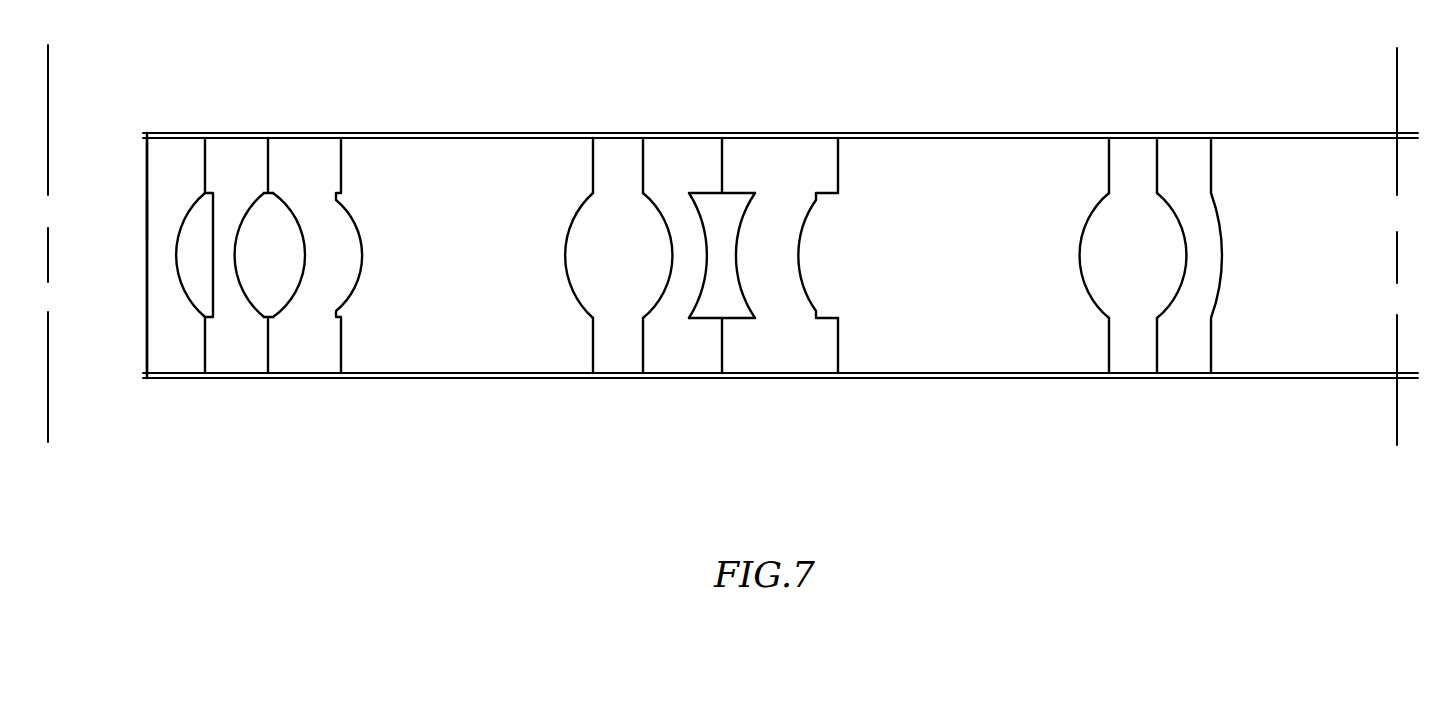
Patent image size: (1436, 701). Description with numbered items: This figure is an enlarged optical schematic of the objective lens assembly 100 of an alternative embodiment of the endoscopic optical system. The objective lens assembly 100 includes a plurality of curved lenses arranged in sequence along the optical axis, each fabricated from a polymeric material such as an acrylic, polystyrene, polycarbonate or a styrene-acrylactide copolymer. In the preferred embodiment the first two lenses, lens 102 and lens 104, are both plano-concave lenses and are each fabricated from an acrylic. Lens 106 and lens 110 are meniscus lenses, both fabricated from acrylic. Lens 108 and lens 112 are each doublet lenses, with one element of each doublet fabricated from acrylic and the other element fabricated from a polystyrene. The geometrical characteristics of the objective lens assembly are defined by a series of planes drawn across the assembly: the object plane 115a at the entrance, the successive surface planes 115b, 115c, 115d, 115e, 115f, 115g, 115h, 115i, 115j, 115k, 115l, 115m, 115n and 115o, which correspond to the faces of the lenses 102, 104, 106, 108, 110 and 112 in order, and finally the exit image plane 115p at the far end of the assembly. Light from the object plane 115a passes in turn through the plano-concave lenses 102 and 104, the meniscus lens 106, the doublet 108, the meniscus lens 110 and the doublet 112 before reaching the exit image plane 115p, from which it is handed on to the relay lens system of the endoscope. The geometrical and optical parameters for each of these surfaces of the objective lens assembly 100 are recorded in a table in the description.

The objective lens assembly 100 is at (430, 452).
The plano-concave lens 102 is at (172, 167).
The plano-concave lens 104 is at (235, 358).
The meniscus lens 106 is at (310, 162).
The doublet lens 108 is at (640, 117).
The meniscus lens 110 is at (777, 162).
The doublet lens 112 is at (1155, 118).
The object plane 115a is at (50, 405).
The surface plane 115b is at (147, 217).
The surface plane 115c is at (215, 213).
The surface plane 115d is at (180, 223).
The surface plane 115e is at (238, 262).
The surface plane 115f is at (300, 262).
The surface plane 115g is at (358, 230).
The surface plane 115h is at (593, 328).
The surface plane 115i is at (657, 303).
The surface plane 115j is at (703, 217).
The surface plane 115k is at (742, 295).
The surface plane 115l is at (802, 242).
The surface plane 115m is at (1080, 265).
The surface plane 115n is at (1184, 283).
The surface plane 115o is at (1223, 273).
The exit image plane 115p is at (1397, 90).